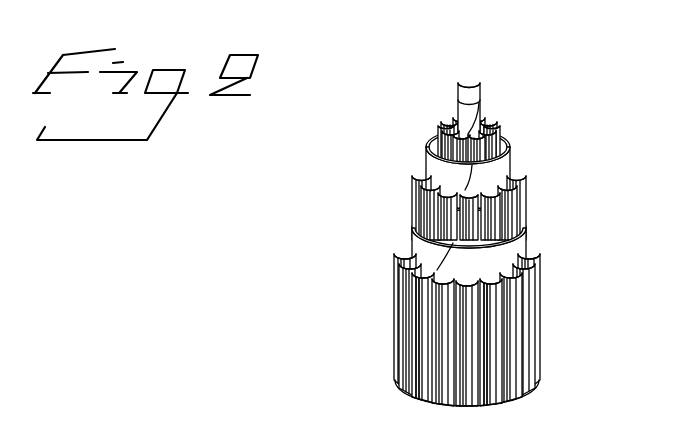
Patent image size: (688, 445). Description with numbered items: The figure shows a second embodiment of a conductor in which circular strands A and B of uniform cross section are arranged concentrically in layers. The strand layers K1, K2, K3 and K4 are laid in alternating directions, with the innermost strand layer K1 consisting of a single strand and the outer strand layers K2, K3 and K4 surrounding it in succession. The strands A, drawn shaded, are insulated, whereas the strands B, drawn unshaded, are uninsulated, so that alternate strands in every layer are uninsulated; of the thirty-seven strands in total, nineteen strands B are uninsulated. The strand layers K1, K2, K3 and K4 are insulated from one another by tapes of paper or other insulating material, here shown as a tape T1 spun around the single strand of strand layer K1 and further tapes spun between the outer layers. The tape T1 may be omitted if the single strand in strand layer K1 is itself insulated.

The strand layer K1 is at (454, 78).
The tape T1 is at (485, 107).
The strand layer K2 is at (485, 91).
The strand layer K3 is at (525, 195).
The strand layer K4 is at (545, 268).
The strand A is at (418, 210).
The strand B is at (472, 78).